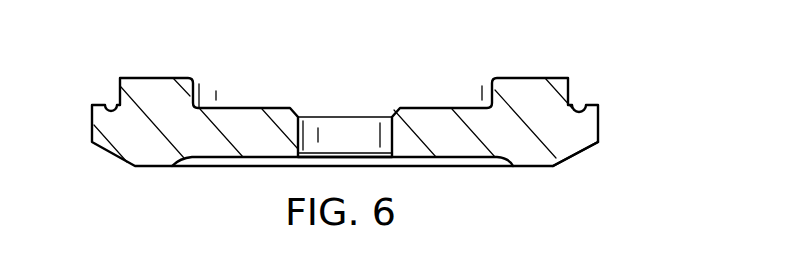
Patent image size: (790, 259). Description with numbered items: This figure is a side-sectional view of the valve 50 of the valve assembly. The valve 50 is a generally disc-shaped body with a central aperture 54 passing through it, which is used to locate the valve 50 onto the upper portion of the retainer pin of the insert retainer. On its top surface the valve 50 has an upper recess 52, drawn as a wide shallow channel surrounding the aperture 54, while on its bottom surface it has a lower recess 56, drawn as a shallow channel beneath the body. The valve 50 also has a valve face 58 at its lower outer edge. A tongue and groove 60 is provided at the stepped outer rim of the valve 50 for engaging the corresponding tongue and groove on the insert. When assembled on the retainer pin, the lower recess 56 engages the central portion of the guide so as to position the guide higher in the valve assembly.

The valve 50 is at (643, 68).
The tongue and groove 60 is at (94, 70).
The upper recess 52 is at (240, 107).
The aperture 54 is at (367, 132).
The lower recess 56 is at (217, 160).
The valve face 58 is at (575, 152).